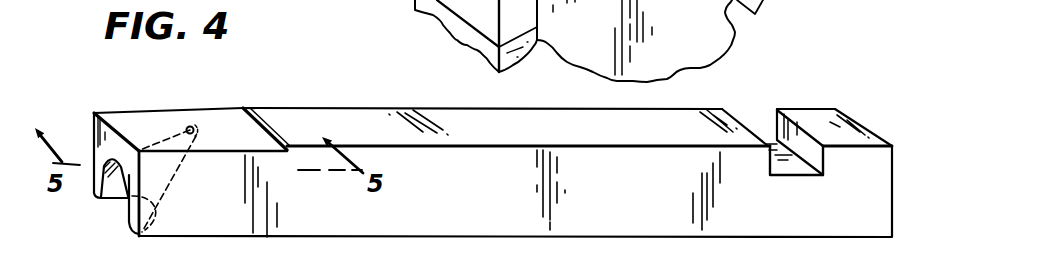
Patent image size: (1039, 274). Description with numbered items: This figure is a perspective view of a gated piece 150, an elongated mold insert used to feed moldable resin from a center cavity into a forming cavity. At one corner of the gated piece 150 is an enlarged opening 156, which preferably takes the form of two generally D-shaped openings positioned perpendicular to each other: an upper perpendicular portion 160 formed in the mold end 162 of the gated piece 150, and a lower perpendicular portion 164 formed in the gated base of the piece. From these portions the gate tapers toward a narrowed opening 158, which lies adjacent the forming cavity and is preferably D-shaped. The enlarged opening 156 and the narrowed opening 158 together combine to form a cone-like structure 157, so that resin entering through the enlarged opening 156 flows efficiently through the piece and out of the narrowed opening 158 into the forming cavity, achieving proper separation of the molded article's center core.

The gated piece 150 is at (380, 93).
The enlarged opening 156 is at (104, 214).
The cone-like structure 157 is at (124, 218).
The narrowed opening 158 is at (190, 124).
The upper perpendicular portion 160 is at (95, 180).
The mold end 162 is at (82, 124).
The lower perpendicular portion 164 is at (147, 118).